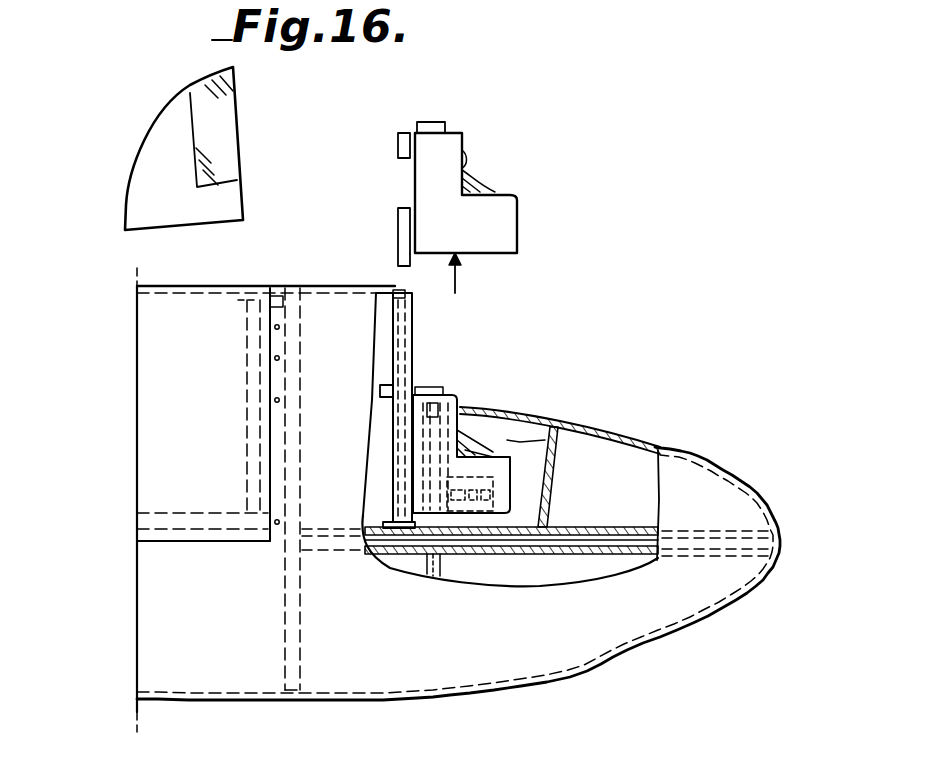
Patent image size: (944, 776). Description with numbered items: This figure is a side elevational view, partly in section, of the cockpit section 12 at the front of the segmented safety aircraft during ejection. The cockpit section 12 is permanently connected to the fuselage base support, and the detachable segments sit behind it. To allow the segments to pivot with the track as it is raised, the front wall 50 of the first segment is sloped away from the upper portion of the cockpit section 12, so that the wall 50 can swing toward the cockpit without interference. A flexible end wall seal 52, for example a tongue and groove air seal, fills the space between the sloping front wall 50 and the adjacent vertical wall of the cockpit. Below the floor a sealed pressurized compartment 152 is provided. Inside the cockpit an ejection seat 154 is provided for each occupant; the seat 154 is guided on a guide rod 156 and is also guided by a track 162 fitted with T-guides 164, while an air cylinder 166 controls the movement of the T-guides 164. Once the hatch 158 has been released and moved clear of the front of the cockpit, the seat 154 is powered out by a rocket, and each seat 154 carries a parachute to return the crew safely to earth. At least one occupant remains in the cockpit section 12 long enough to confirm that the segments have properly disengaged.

The cockpit section 12 is at (680, 608).
The front wall 50 is at (262, 322).
The flexible end wall seal 52 is at (283, 342).
The sealed pressurized compartment 152 is at (507, 440).
The ejection seat 154 is at (482, 238).
The guide rod 156 is at (458, 405).
The hatch 158 is at (178, 122).
The track 162 is at (407, 323).
The T-guides 164 is at (400, 137).
The air cylinder 166 is at (378, 388).